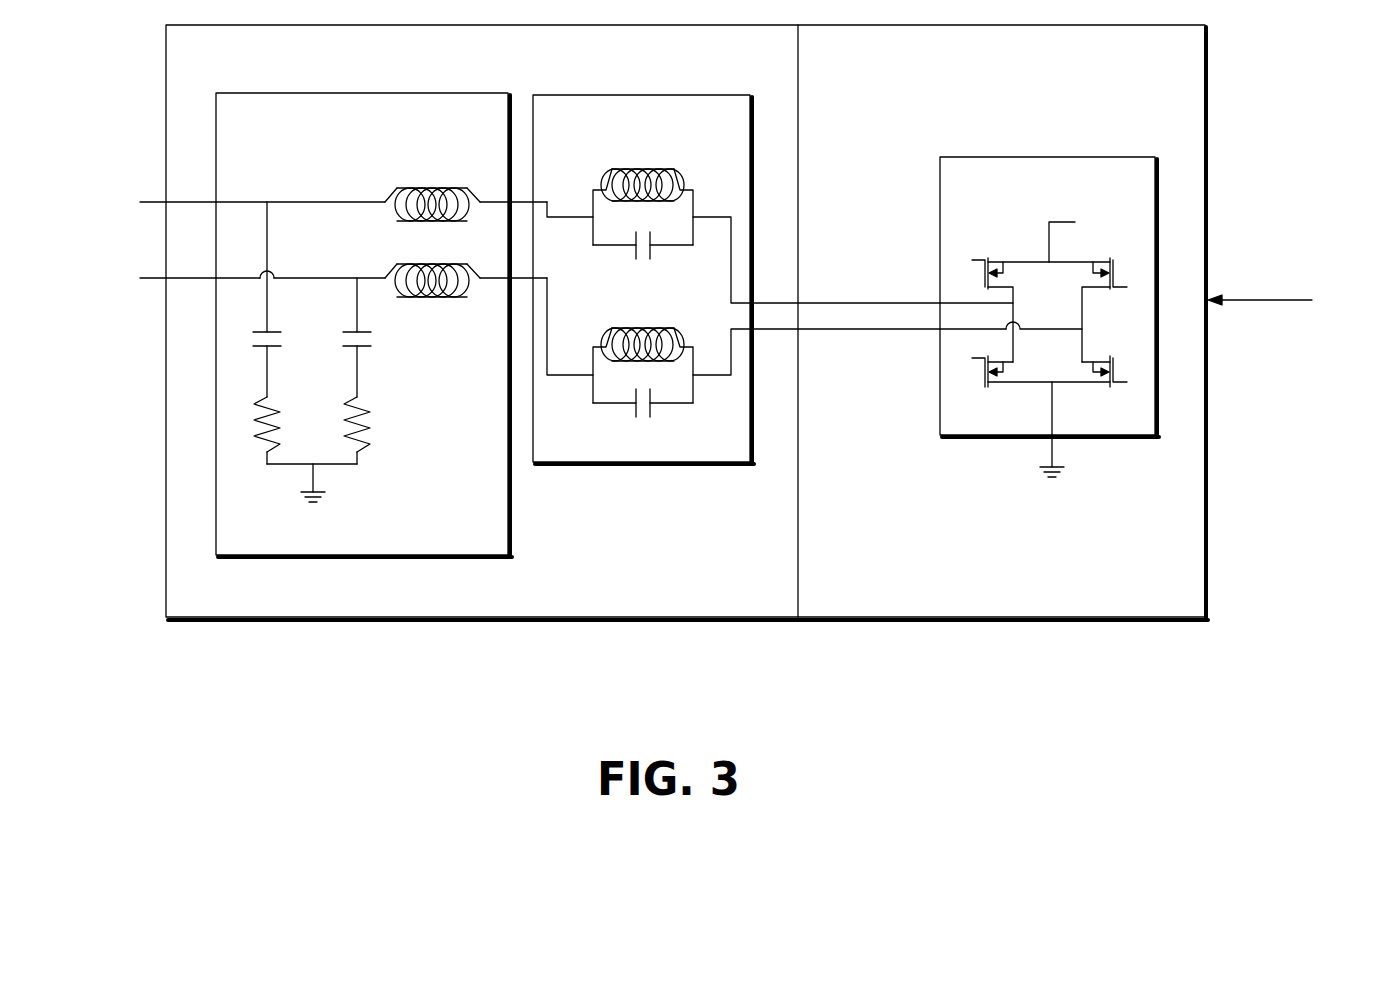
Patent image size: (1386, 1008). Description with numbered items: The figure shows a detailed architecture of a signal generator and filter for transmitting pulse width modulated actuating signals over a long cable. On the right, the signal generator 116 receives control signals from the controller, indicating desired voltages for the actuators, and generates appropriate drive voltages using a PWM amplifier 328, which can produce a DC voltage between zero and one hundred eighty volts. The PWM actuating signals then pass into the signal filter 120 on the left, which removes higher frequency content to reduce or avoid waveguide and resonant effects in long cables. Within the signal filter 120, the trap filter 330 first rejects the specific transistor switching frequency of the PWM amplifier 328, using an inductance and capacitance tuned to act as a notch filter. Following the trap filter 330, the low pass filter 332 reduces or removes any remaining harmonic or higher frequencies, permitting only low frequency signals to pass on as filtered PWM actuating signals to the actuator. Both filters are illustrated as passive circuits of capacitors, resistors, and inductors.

The signal filter 120 is at (303, 70).
The low pass filter 332 is at (382, 141).
The trap filter 330 is at (657, 140).
The signal generator 116 is at (975, 70).
The PWM amplifier 328 is at (1100, 199).